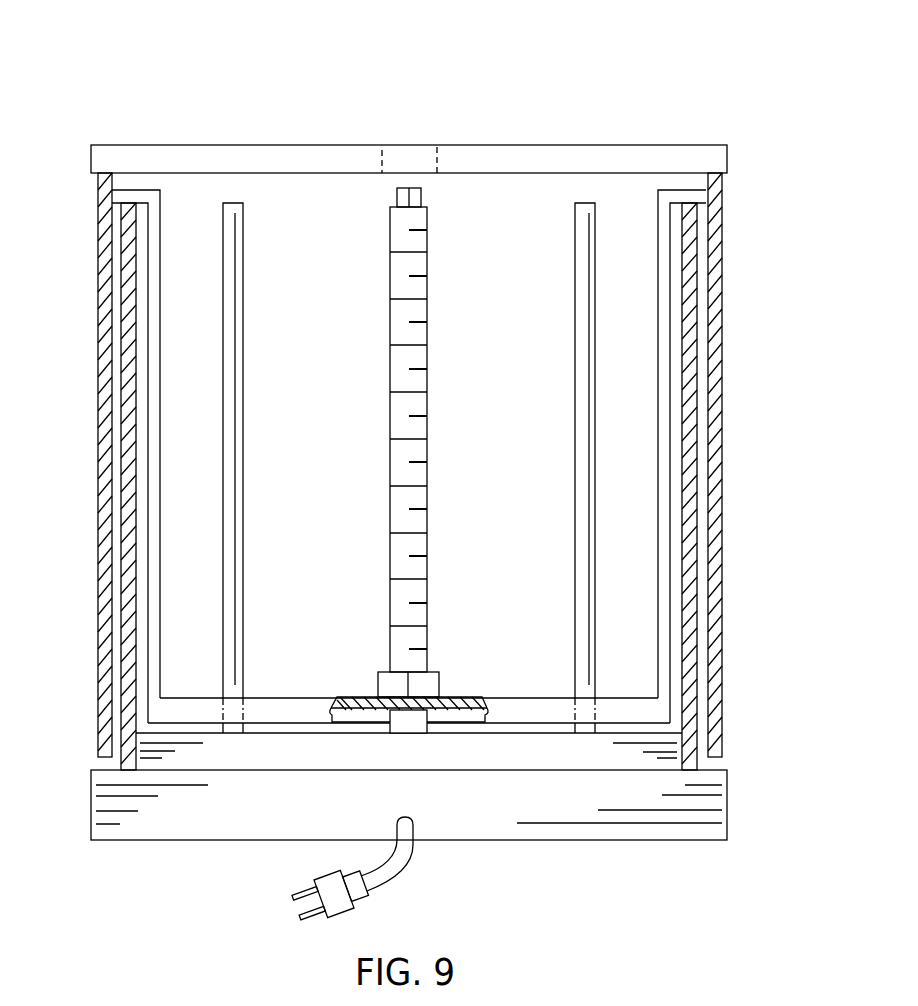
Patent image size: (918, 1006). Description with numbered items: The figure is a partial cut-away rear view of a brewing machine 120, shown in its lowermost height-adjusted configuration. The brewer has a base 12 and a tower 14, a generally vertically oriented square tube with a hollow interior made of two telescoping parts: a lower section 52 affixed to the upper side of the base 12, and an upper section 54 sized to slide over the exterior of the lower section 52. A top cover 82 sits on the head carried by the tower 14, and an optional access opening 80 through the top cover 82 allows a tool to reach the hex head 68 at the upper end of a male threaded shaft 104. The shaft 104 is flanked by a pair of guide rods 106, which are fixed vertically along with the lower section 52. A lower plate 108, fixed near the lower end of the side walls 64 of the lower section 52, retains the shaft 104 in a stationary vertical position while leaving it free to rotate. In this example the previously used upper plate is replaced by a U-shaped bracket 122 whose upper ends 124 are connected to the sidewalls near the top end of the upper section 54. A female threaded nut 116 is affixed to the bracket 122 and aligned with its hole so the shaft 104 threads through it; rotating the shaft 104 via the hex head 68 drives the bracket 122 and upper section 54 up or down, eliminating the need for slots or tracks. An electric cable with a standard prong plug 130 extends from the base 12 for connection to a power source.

The base 12 is at (732, 786).
The tower 14 is at (742, 390).
The lower section 52 is at (142, 254).
The upper section 54 is at (95, 408).
The side walls 64 is at (409, 483).
The hex head 68 is at (415, 199).
The access opening 80 is at (386, 160).
The top cover 82 is at (105, 152).
The male threaded shaft 104 is at (420, 403).
The guide rods 106 is at (227, 450).
The lower plate 108 is at (592, 748).
The female threaded nut 116 is at (437, 685).
The brewing machine 120 is at (725, 104).
The U-shaped bracket 122 is at (192, 708).
The upper ends 124 is at (143, 190).
The plug 130 is at (328, 875).